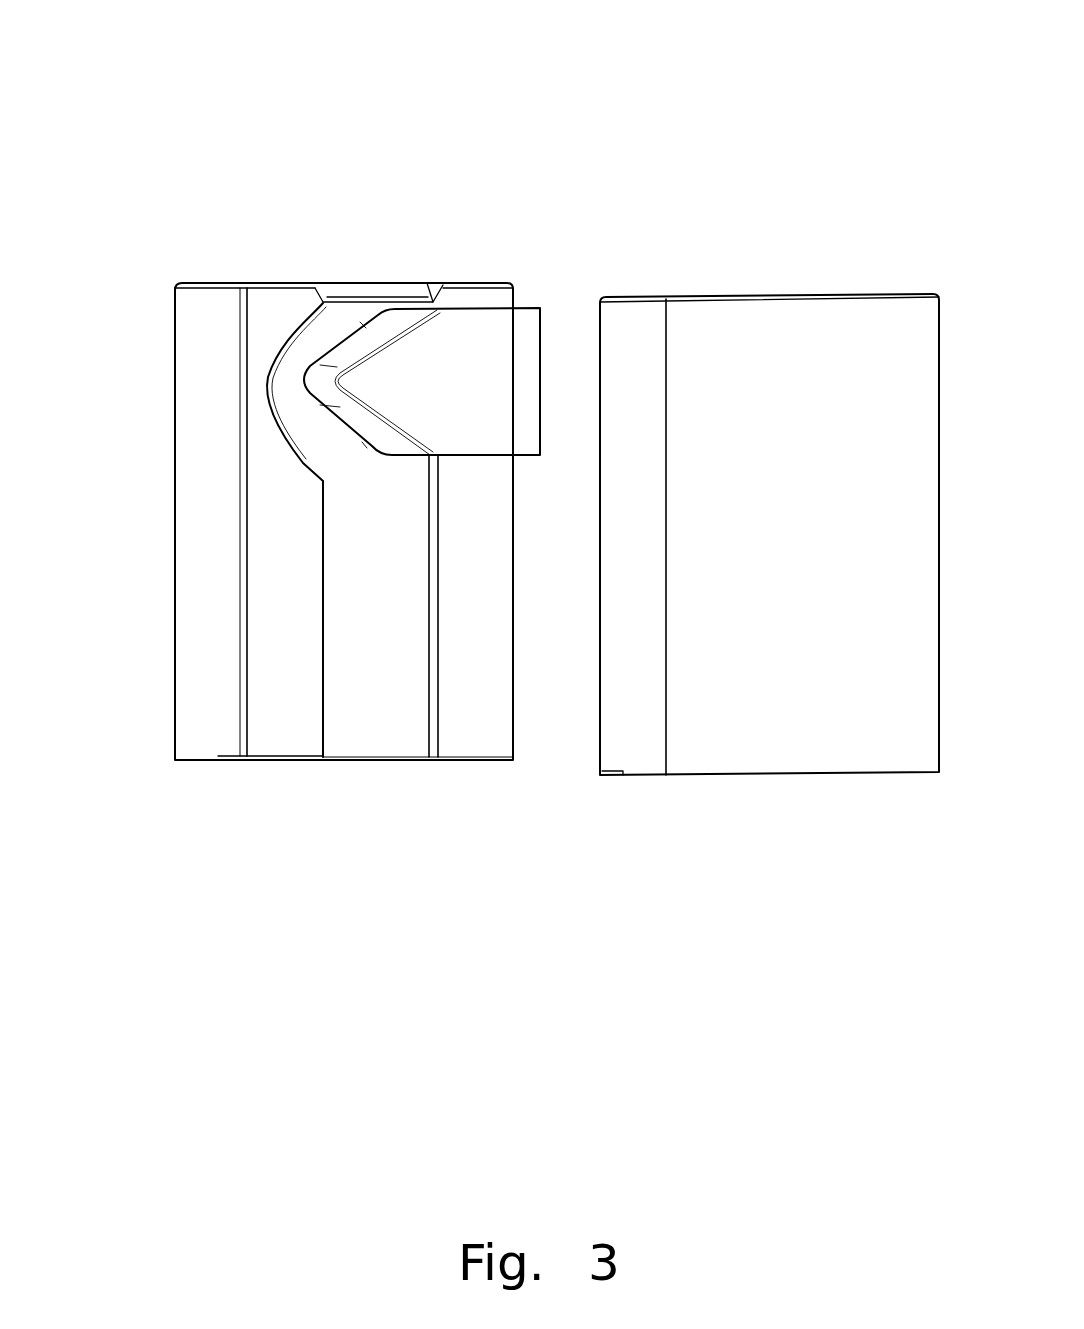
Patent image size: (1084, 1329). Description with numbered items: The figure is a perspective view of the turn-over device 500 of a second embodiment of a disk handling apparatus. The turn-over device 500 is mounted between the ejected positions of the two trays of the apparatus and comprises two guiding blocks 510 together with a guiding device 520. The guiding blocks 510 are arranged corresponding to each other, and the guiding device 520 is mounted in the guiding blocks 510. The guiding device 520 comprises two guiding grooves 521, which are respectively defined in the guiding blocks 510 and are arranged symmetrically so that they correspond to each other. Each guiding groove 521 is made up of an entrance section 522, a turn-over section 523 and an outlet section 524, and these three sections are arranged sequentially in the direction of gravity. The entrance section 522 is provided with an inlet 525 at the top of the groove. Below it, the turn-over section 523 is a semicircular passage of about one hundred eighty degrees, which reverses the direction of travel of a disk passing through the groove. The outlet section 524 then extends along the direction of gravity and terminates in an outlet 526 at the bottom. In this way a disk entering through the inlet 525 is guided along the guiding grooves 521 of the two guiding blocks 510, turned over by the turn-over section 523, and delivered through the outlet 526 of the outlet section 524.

The turn-over device 500 is at (822, 140).
The guiding block 510 is at (213, 655).
The guiding device 520 is at (513, 344).
The guiding groove 521 is at (288, 490).
The entrance section 522 is at (335, 280).
The turn-over section 523 is at (290, 404).
The outlet section 524 is at (323, 710).
The inlet 525 is at (400, 280).
The outlet 526 is at (408, 738).